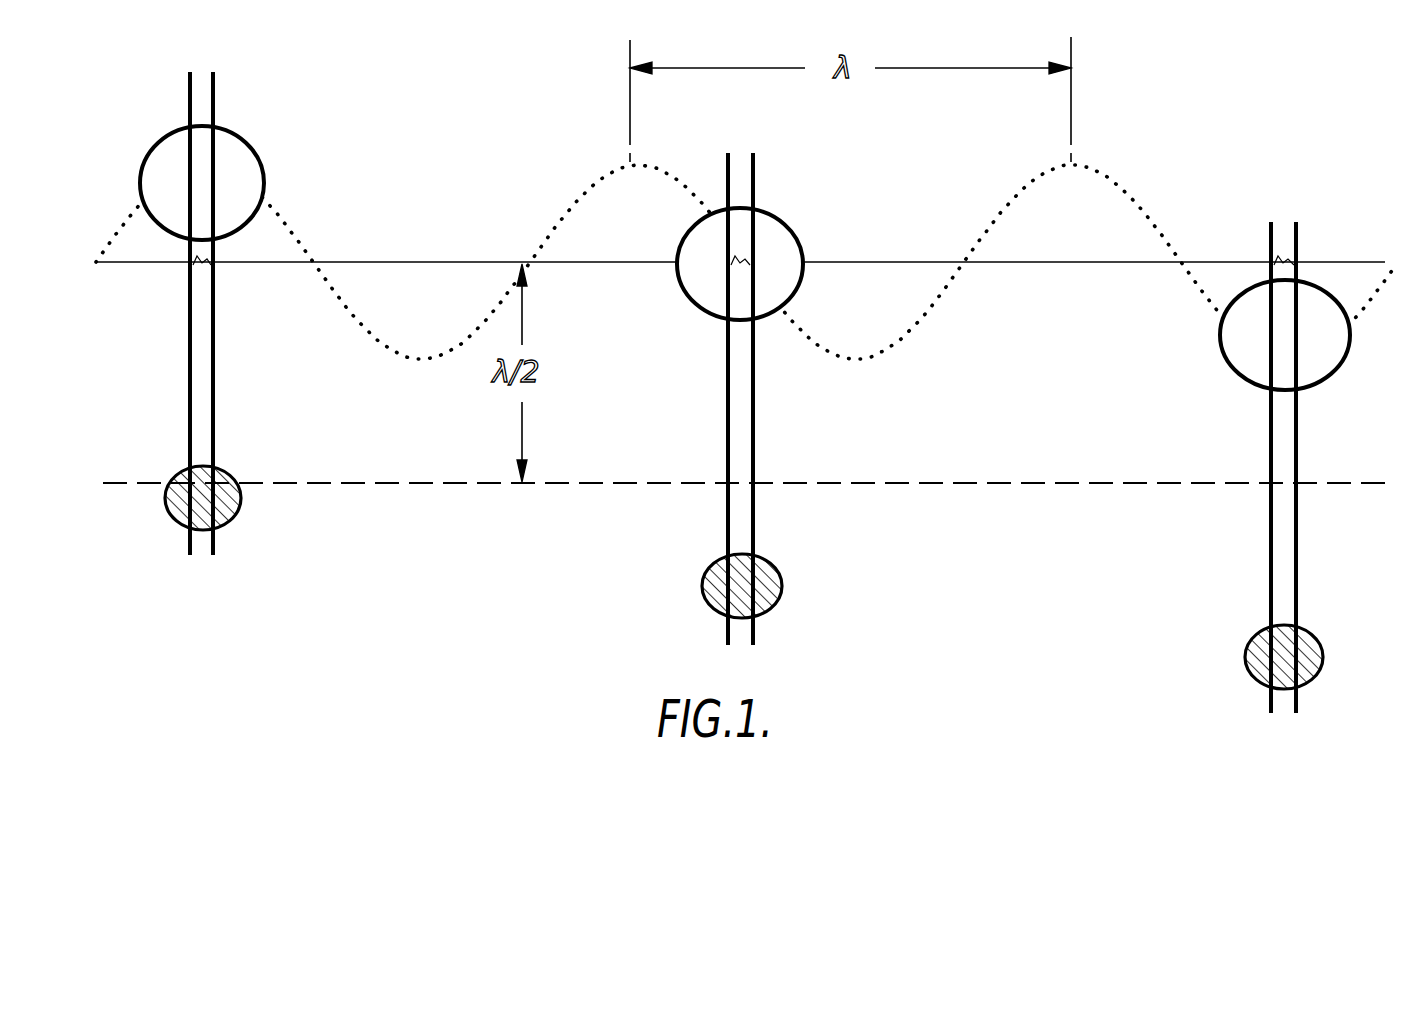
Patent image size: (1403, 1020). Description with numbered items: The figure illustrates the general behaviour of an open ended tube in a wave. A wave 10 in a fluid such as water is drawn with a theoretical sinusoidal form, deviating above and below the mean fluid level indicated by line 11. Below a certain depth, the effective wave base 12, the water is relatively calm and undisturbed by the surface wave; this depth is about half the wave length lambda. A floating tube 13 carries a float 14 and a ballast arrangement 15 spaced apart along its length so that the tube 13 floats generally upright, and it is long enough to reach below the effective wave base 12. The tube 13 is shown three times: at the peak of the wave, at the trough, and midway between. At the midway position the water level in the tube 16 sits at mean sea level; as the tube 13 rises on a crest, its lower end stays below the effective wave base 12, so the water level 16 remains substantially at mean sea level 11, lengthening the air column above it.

The wave 10 is at (1126, 190).
The mean fluid level 11 is at (1213, 262).
The effective wave base 12 is at (1333, 485).
The floating tube 13 is at (215, 408).
The float 14 is at (262, 145).
The ballast arrangement 15 is at (240, 518).
The water level in the tube 16 is at (200, 266).